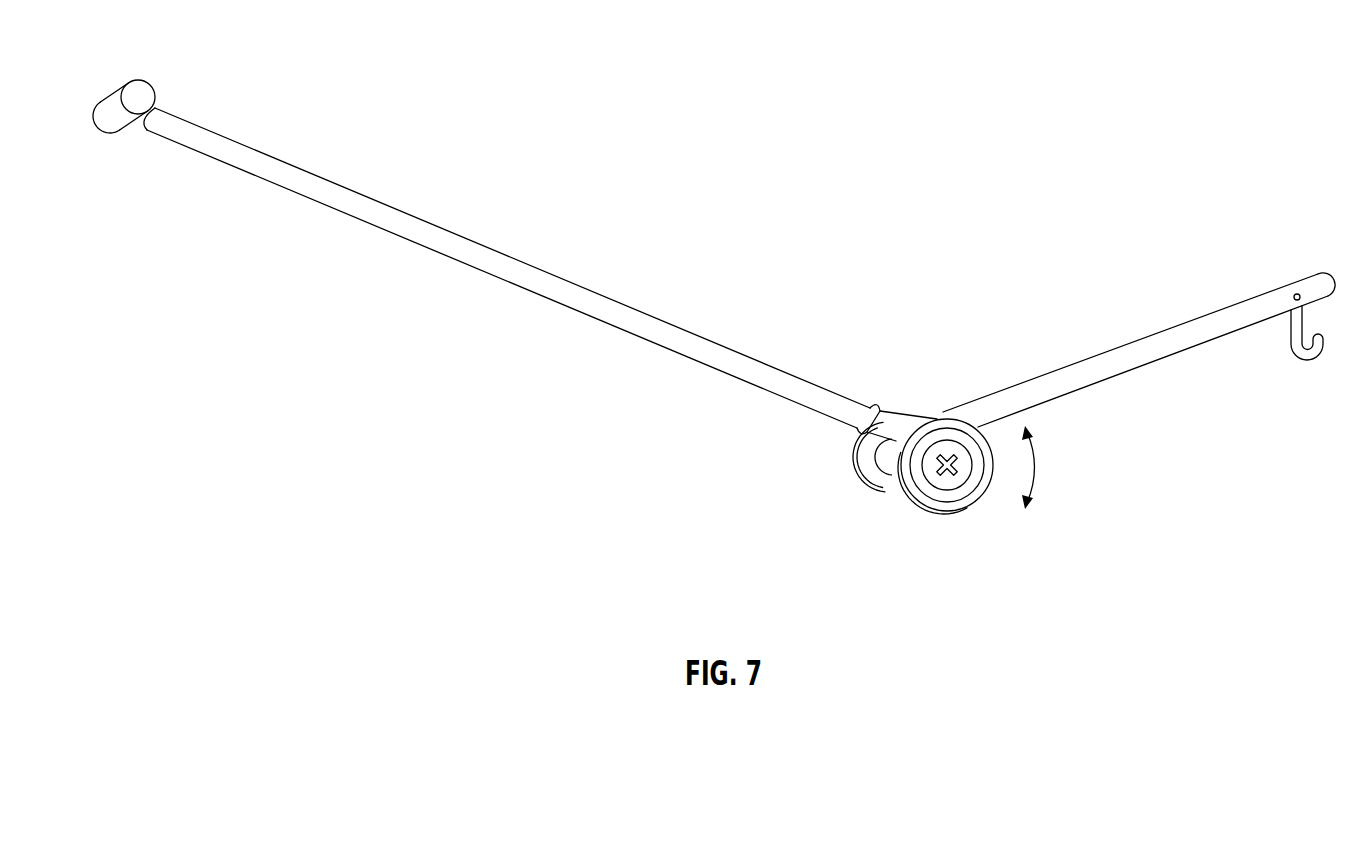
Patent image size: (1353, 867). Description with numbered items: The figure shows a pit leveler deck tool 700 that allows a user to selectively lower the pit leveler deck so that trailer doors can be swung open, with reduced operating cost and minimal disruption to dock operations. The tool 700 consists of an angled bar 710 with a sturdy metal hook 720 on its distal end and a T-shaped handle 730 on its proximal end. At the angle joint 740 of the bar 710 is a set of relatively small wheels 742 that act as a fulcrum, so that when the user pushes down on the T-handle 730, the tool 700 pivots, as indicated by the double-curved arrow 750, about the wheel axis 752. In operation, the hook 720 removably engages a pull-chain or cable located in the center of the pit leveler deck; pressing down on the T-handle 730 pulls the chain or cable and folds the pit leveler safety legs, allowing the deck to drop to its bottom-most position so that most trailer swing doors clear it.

The tool 700 is at (695, 293).
The angled bar 710 is at (771, 365).
The hook 720 is at (1305, 361).
The T-shaped handle 730 is at (112, 95).
The angle joint 740 is at (915, 413).
The wheels 742 is at (921, 512).
The double-curved arrow 750 is at (1036, 464).
The wheel axis 752 is at (945, 466).